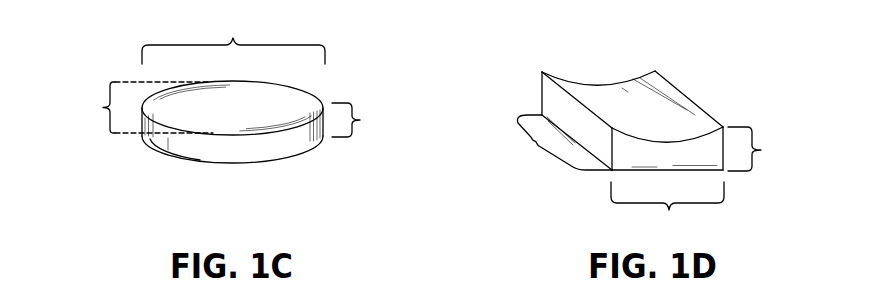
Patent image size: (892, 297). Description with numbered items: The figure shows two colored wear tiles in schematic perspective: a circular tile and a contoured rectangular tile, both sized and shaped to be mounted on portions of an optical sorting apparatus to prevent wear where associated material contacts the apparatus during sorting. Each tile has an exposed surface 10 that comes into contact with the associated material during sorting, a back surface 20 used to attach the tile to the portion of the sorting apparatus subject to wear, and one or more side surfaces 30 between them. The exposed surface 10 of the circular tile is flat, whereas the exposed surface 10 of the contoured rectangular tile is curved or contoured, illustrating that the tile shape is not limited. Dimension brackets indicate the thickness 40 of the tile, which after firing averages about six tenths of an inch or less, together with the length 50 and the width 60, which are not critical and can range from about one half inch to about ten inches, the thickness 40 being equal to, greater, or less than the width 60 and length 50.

In FIG. 1C, the exposed surface 10 is at (283, 98).
In FIG. 1D, the exposed surface 10 is at (677, 102).
In FIG. 1C, the back surface 20 is at (164, 160).
In FIG. 1D, the back surface 20 is at (706, 177).
In FIG. 1C, the side surface 30 is at (290, 147).
In FIG. 1D, the side surface 30 is at (550, 99).
In FIG. 1C, the thickness 40 is at (359, 120).
In FIG. 1D, the thickness 40 is at (758, 149).
In FIG. 1C, the length 50 is at (145, 107).
In FIG. 1D, the length 50 is at (559, 142).
In FIG. 1C, the width 60 is at (233, 39).
In FIG. 1D, the width 60 is at (667, 209).